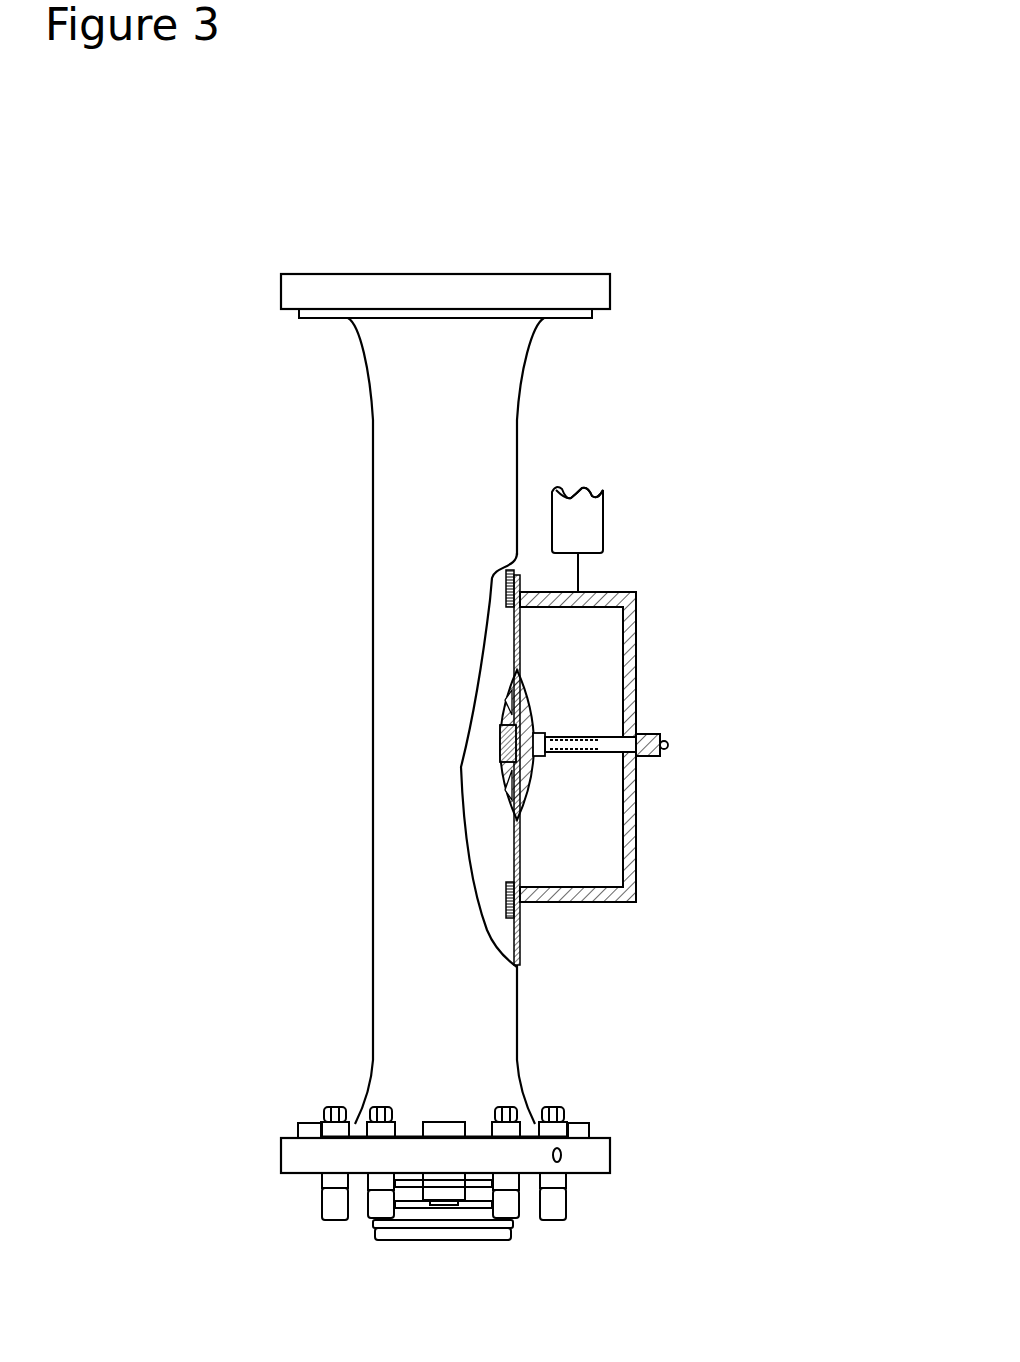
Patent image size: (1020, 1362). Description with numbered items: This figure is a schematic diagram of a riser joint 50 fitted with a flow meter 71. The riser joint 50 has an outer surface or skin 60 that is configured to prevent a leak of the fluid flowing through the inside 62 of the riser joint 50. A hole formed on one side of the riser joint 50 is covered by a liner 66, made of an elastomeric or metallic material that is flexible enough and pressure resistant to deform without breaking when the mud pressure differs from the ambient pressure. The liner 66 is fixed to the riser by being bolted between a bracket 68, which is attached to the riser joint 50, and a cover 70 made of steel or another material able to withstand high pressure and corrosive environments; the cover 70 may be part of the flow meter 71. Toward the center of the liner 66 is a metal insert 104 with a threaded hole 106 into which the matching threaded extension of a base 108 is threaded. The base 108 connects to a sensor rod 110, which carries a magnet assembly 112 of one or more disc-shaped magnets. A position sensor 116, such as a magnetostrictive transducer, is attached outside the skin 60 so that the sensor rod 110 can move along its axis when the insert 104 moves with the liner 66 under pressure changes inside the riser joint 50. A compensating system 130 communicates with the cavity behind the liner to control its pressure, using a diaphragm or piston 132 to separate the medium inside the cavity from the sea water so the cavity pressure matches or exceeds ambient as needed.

The riser joint 50 is at (458, 177).
The outer surface or skin 60 is at (396, 898).
The inside 62 is at (475, 792).
The liner 66 is at (524, 843).
The bracket 68 is at (520, 907).
The cover 70 is at (630, 853).
The flow meter 71 is at (649, 685).
The insert 104 is at (532, 765).
The threaded hole 106 is at (500, 728).
The base 108 is at (542, 738).
The sensor rod 110 is at (593, 728).
The magnet assembly 112 is at (623, 731).
The position sensor 116 is at (654, 758).
The compensating system 130 is at (606, 514).
The diaphragm or piston 132 is at (562, 490).